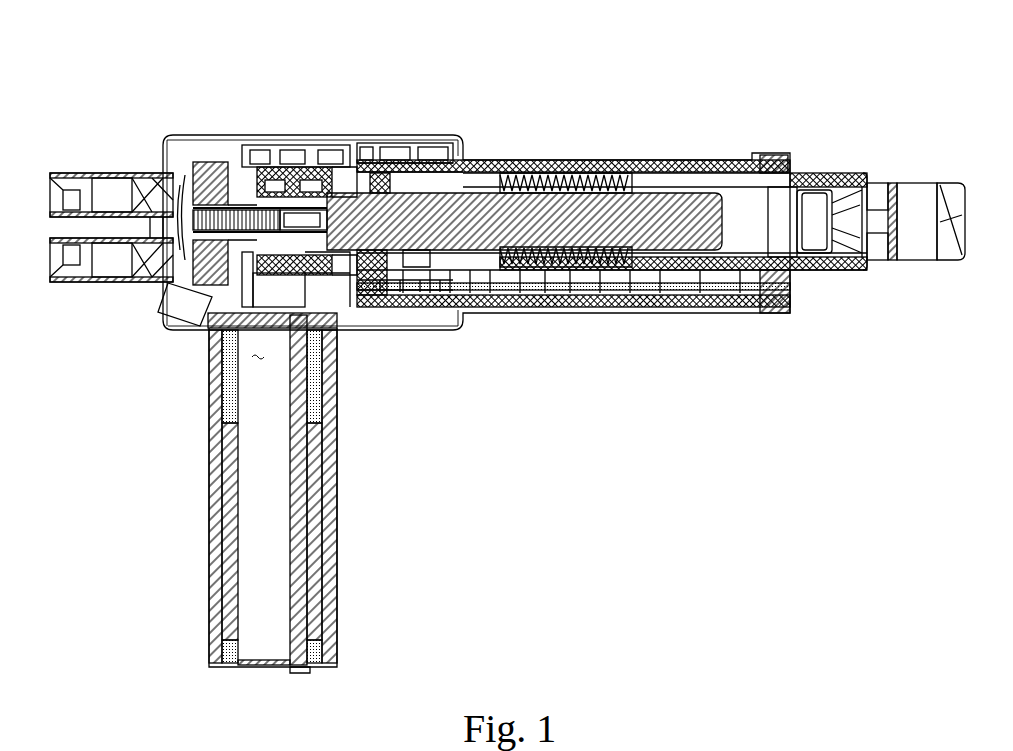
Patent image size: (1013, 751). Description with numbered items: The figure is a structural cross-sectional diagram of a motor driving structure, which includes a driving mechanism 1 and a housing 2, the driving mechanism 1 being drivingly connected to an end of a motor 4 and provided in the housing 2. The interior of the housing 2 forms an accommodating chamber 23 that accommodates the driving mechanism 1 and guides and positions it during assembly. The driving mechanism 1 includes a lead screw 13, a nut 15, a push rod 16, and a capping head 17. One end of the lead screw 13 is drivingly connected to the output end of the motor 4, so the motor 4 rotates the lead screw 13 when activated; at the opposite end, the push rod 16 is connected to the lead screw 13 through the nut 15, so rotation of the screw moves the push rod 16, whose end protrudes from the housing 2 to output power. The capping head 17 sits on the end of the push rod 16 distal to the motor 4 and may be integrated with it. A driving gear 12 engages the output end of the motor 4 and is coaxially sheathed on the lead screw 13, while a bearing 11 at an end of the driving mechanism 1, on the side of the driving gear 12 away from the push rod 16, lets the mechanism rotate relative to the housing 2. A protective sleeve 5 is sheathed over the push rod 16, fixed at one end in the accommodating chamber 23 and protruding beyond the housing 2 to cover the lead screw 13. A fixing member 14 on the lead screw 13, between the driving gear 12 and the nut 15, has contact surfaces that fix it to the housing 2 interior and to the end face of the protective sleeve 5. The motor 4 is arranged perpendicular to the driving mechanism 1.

The driving mechanism 1 is at (498, 84).
The housing 2 is at (147, 200).
The motor 4 is at (270, 452).
The protective sleeve 5 is at (667, 160).
The bearing 11 is at (207, 182).
The driving gear 12 is at (307, 192).
The lead screw 13 is at (432, 220).
The fixing member 14 is at (377, 257).
The nut 15 is at (517, 173).
The push rod 16 is at (807, 172).
The capping head 17 is at (902, 207).
The accommodating chamber 23 is at (332, 165).